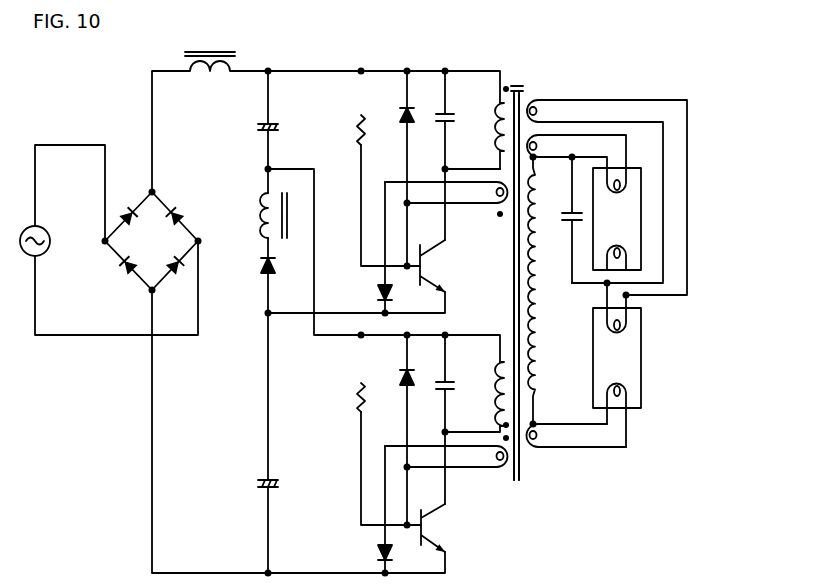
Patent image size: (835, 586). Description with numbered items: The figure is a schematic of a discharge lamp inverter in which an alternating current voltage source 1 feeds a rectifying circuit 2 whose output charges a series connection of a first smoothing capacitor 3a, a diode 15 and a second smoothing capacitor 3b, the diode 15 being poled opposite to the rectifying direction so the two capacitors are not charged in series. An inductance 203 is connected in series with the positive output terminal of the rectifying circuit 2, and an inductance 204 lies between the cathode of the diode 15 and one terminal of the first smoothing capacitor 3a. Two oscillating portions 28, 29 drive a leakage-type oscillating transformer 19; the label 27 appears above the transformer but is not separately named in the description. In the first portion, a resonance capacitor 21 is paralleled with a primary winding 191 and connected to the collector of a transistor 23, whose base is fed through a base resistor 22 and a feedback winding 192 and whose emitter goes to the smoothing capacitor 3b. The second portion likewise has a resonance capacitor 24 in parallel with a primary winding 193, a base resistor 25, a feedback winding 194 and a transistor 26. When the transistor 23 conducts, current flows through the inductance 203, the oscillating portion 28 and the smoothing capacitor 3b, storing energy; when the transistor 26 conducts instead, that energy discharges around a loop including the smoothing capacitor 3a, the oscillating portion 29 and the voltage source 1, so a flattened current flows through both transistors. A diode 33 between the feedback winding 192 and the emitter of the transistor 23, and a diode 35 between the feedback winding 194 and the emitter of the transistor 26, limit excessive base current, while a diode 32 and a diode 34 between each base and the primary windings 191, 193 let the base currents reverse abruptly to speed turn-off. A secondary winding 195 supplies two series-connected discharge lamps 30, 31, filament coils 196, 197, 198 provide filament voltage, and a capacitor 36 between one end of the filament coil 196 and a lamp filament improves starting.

The alternating current voltage source 1 is at (48, 233).
The rectifying circuit 2 is at (168, 197).
The first smoothing capacitor 3a is at (275, 121).
The second smoothing capacitor 3b is at (276, 478).
The diode 15 is at (261, 274).
The oscillating transformer 19 is at (525, 83).
The resonance capacitor 21 is at (450, 116).
The base resistor 22 is at (366, 131).
The transistor 23 is at (425, 262).
The resonance capacitor 24 is at (450, 383).
The base resistor 25 is at (357, 398).
The transistor 26 is at (424, 539).
The transformer 27 is at (538, 36).
The oscillating portion 28 is at (467, 36).
The oscillating portion 29 is at (511, 546).
The discharge lamp 30 is at (630, 218).
The discharge lamp 31 is at (632, 378).
The diode 32 is at (404, 113).
The diode 33 is at (375, 293).
The diode 34 is at (402, 386).
The diode 35 is at (376, 556).
The capacitor 36 is at (571, 228).
The primary winding 191 is at (493, 122).
The feedback winding 192 is at (495, 208).
The primary winding 193 is at (493, 389).
The feedback winding 194 is at (497, 471).
The secondary winding 195 is at (538, 299).
The filament coil 196 is at (537, 146).
The filament coil 197 is at (537, 436).
The filament coil 198 is at (537, 112).
The inductance 203 is at (217, 51).
The inductance 204 is at (262, 205).